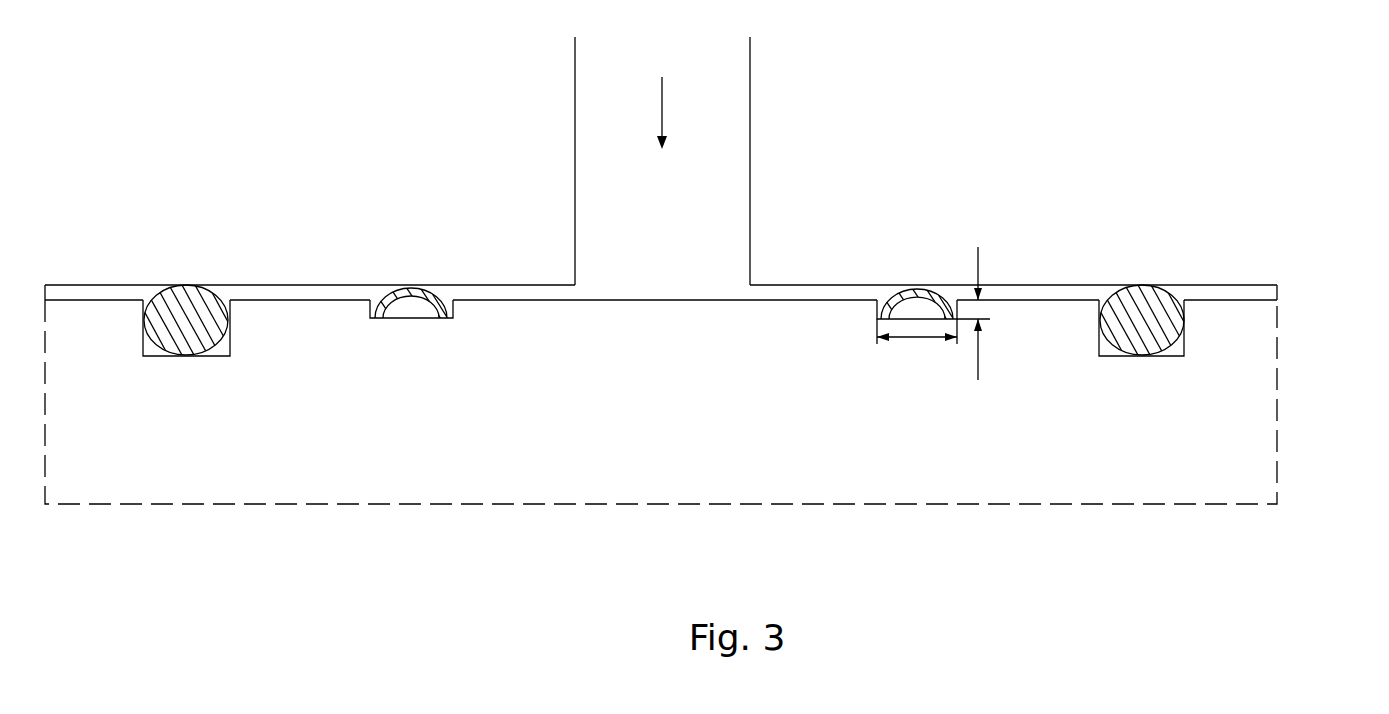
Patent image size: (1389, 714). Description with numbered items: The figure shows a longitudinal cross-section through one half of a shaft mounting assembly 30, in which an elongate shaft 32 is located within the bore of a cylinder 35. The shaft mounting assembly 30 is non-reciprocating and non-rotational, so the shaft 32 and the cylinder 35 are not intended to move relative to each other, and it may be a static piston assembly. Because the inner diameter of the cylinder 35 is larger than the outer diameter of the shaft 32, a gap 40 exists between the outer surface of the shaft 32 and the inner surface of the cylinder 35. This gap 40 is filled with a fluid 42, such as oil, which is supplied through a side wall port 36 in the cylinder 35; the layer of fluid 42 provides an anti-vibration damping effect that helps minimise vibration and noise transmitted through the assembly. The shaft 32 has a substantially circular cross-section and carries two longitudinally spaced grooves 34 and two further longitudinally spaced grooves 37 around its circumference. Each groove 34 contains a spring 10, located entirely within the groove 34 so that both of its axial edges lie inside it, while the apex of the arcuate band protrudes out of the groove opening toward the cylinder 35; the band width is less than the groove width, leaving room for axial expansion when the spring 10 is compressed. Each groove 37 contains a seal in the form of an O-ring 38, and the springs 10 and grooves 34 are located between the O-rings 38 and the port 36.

The spring 10 is at (410, 292).
The shaft mounting assembly 30 is at (166, 130).
The shaft 32 is at (1278, 410).
The groove 34 is at (415, 320).
The cylinder 35 is at (1032, 285).
The side wall port 36 is at (750, 120).
The groove 37 is at (160, 358).
The O-ring 38 is at (195, 298).
The gap 40 is at (1277, 292).
The fluid 42 is at (327, 285).